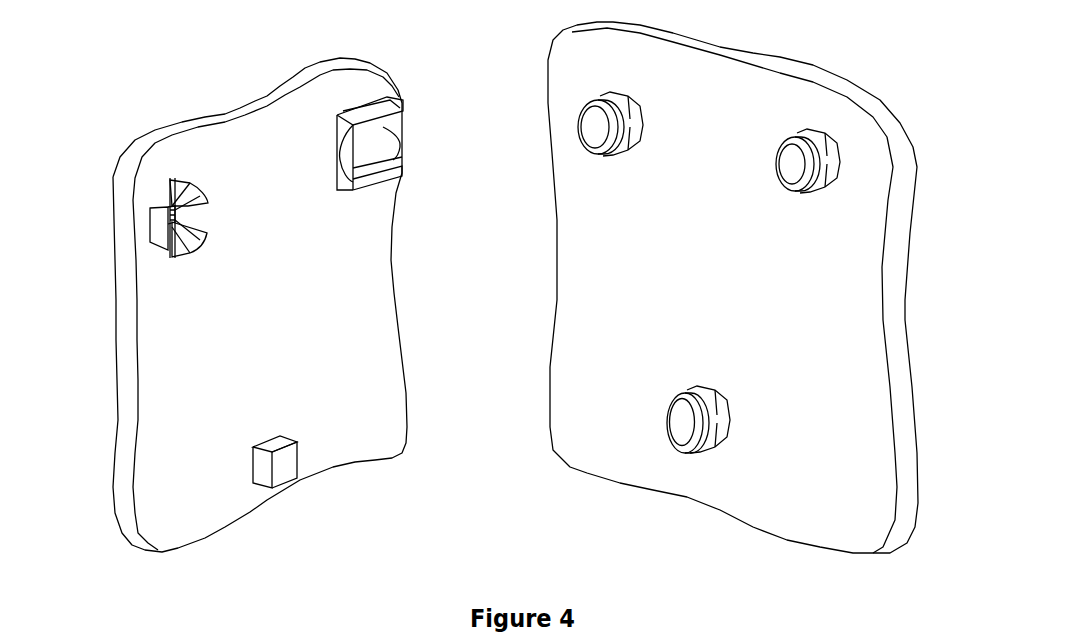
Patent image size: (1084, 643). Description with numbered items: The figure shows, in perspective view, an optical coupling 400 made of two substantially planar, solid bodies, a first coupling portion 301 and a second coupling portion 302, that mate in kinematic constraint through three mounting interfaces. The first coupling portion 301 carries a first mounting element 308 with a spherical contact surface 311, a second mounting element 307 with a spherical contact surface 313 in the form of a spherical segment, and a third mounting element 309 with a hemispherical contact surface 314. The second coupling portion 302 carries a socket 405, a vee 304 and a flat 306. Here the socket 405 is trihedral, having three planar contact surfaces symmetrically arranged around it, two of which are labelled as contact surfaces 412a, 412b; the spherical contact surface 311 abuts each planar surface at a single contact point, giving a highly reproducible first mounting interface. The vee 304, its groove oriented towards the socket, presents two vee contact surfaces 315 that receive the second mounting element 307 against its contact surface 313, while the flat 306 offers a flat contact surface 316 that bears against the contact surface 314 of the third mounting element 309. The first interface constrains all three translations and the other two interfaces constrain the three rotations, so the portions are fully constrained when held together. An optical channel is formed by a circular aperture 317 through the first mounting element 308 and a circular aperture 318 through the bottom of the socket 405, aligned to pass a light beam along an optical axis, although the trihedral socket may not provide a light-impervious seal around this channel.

The optical coupling 400 is at (165, 59).
The socket 405 is at (160, 215).
The planar contact surface 412a is at (188, 197).
The planar contact surface 412b is at (190, 236).
The circular aperture 318 is at (175, 221).
The vee contact surfaces 315 is at (380, 120).
The vee 304 is at (383, 177).
The second coupling portion 302 is at (158, 402).
The flat 306 is at (260, 453).
The flat contact surface 316 is at (278, 455).
The second mounting element 307 is at (585, 128).
The spherical contact surface 313 is at (615, 137).
The circular aperture 317 is at (788, 167).
The first mounting element 308 is at (833, 163).
The spherical contact surface 311 is at (812, 178).
The first coupling portion 301 is at (847, 353).
The spherical contact surface 314 is at (683, 427).
The third mounting element 309 is at (717, 432).